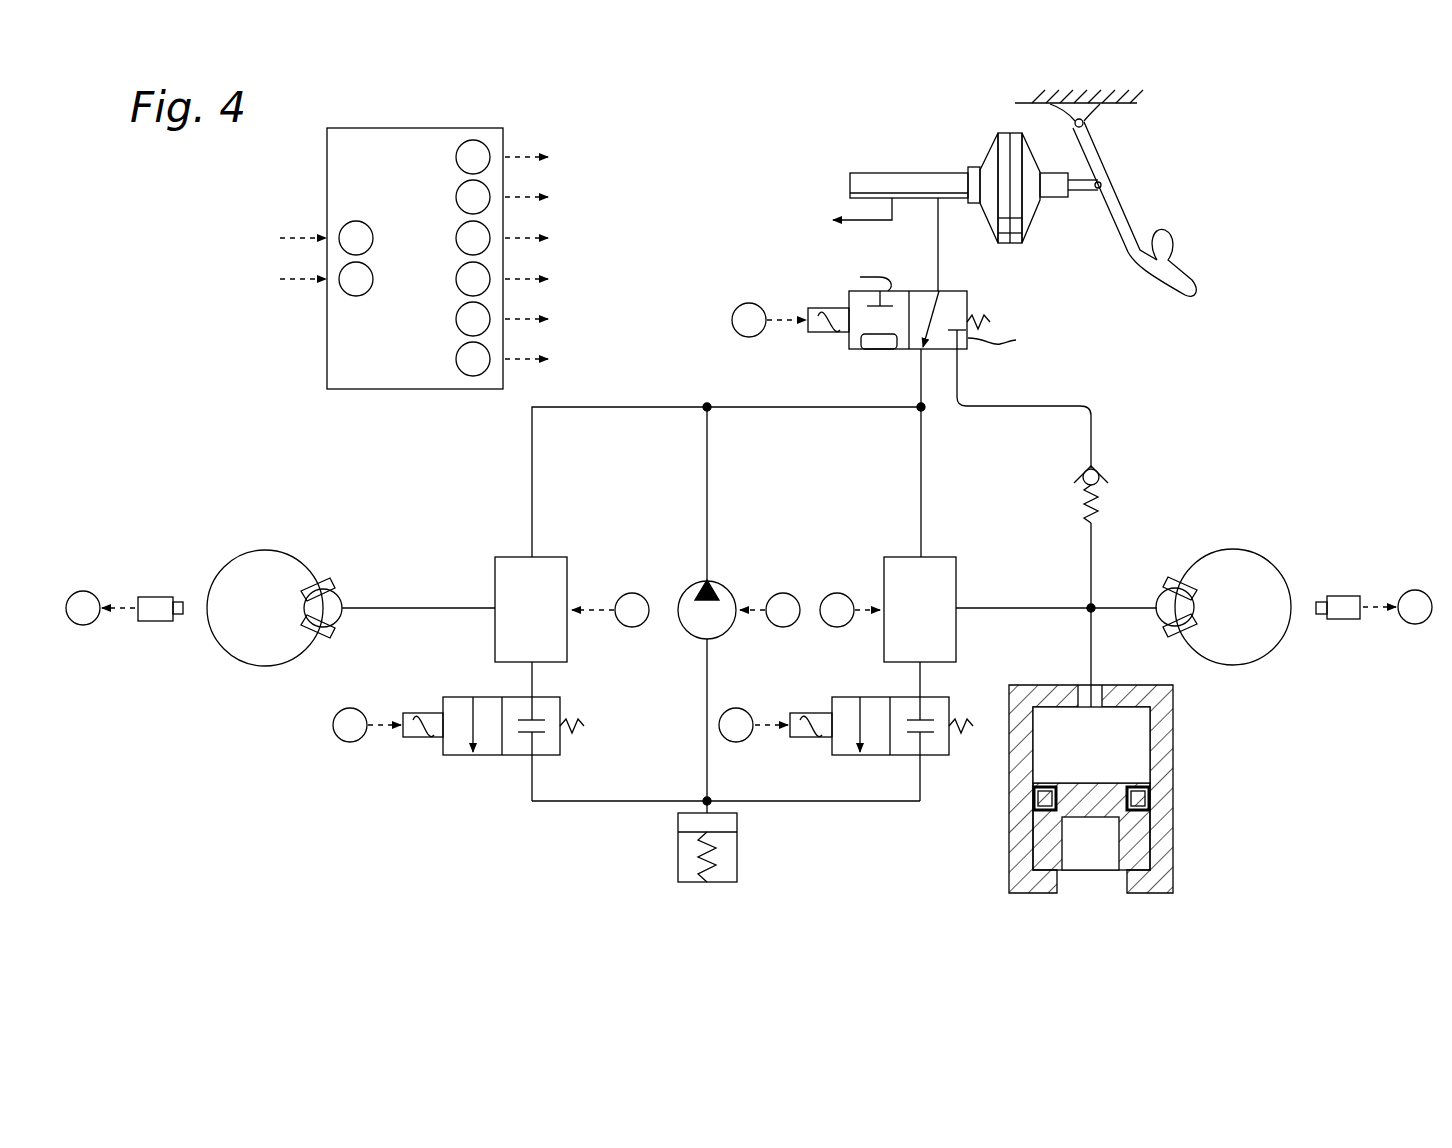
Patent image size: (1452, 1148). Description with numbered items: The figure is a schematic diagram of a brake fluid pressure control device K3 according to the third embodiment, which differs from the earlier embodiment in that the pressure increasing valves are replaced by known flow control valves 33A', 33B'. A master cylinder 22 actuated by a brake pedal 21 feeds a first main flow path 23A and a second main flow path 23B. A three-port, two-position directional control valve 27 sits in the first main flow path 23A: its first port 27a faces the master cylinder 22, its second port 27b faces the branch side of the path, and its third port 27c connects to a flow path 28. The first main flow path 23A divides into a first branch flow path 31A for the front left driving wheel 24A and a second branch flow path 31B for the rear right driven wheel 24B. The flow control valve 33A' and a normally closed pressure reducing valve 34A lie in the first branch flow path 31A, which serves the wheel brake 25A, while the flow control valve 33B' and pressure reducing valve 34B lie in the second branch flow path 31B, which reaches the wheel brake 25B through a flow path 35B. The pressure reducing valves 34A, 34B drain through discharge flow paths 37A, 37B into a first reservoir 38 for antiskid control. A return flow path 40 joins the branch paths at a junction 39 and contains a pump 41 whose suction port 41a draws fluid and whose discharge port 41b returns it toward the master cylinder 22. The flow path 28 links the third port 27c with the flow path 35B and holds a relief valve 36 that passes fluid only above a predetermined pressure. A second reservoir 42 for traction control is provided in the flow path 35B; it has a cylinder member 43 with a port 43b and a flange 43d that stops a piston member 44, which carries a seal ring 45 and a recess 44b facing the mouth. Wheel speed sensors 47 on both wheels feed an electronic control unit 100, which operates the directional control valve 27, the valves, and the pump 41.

The electronic control unit 100 is at (443, 128).
The brake fluid pressure control device K3 is at (318, 416).
The master cylinder 22 is at (886, 166).
The brake pedal 21 is at (1190, 276).
The first main flow path 23A is at (940, 248).
The second main flow path 23B is at (870, 222).
The directional control valve 27 is at (806, 310).
The first port 27a is at (935, 291).
The second port 27b is at (919, 350).
The third port 27c is at (960, 350).
The flow path 28 is at (1072, 405).
The first branch flow path 31A is at (630, 404).
The second branch flow path 31B is at (919, 467).
The relief valve 36 is at (1100, 470).
The junction 39 is at (708, 406).
The return flow path 40 is at (708, 548).
The pump 41 is at (732, 626).
The suction port 41a is at (708, 634).
The discharge port 41b is at (705, 584).
The flow control valve 33A' is at (572, 607).
The flow control valve 33B' is at (920, 603).
The front left driving wheel 24A is at (290, 548).
The rear right driven wheel 24B is at (1235, 548).
The wheel brake 25A is at (330, 640).
The wheel brake 25B is at (1170, 640).
The flow path 35B is at (1112, 607).
The wheel speed sensor 47 is at (162, 622).
The pressure reducing valve 34A is at (463, 756).
The pressure reducing valve 34B is at (935, 757).
The discharge flow path 37A is at (585, 803).
The discharge flow path 37B is at (865, 803).
The first reservoir 38 is at (738, 858).
The second reservoir 42 is at (1110, 757).
The cylinder member 43 is at (1173, 758).
The port 43b is at (1089, 686).
The flange 43d is at (1030, 893).
The piston member 44 is at (1088, 786).
The recess 44b is at (1060, 838).
The seal ring 45 is at (1148, 812).